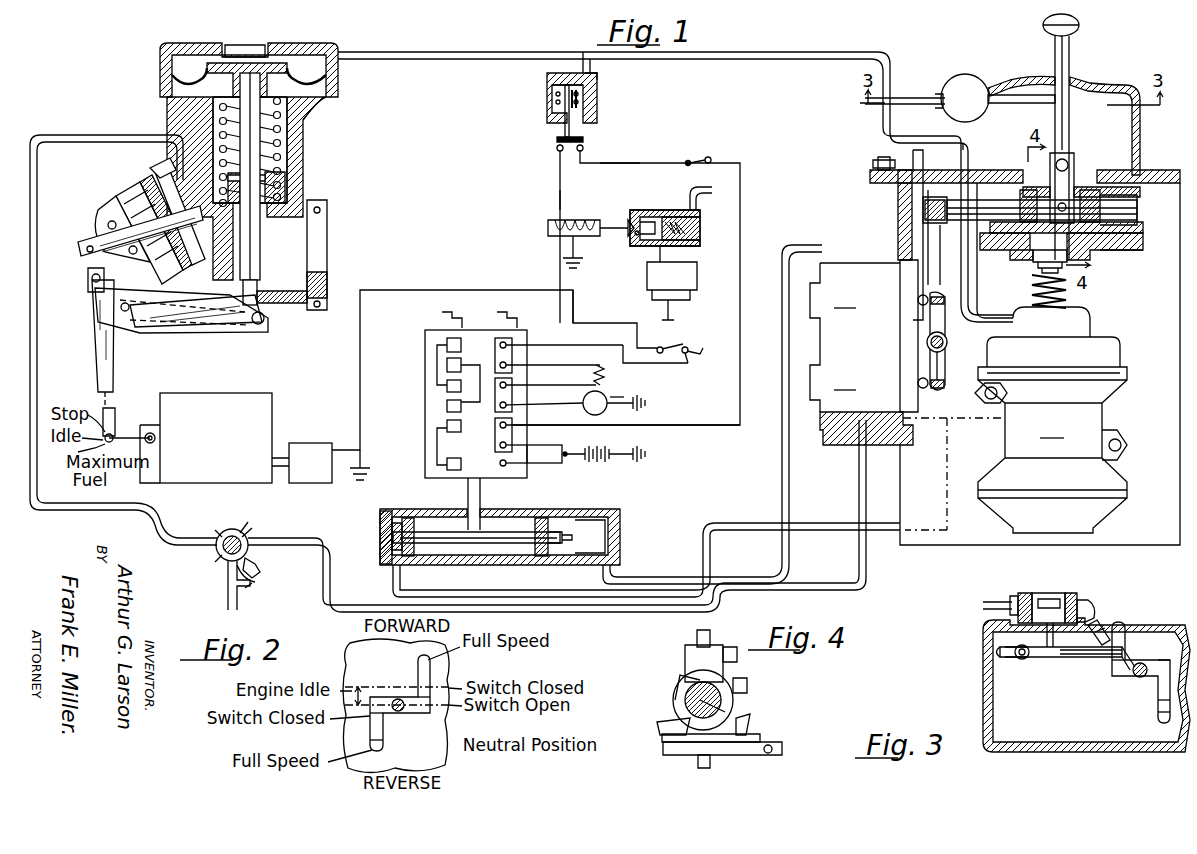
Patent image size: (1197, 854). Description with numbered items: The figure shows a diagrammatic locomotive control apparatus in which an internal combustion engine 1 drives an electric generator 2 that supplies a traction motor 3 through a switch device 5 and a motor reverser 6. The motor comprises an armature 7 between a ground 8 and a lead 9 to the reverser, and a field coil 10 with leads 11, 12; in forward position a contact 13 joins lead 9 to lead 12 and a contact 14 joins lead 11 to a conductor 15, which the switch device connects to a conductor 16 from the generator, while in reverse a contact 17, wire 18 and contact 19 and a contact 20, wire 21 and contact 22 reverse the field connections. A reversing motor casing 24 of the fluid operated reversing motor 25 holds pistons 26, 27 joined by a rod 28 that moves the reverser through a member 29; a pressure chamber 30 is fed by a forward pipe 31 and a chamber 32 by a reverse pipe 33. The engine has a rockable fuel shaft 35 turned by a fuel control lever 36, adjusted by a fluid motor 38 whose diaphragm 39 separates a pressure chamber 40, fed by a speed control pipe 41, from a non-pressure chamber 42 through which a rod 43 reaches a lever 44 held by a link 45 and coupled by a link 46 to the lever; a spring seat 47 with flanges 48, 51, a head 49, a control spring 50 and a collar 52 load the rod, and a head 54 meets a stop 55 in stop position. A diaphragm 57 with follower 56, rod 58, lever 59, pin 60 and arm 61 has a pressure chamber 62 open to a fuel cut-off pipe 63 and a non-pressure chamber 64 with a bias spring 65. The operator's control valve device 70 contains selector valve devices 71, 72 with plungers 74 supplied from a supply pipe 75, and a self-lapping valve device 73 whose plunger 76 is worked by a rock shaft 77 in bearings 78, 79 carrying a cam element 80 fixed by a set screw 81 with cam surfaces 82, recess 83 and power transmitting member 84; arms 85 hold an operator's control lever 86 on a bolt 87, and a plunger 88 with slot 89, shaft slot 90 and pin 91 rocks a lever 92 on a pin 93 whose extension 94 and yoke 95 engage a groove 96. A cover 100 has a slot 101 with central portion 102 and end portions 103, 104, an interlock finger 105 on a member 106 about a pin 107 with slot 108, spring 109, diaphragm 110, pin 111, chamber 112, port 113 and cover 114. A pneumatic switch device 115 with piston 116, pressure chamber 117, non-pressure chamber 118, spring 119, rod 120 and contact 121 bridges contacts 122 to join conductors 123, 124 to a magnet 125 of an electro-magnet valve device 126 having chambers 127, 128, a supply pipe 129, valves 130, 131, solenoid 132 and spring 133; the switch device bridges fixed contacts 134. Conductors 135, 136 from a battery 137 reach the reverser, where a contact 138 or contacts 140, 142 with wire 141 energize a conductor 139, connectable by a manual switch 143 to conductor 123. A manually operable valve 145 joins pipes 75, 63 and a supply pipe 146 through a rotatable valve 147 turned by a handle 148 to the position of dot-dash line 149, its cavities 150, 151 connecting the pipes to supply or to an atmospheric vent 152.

In FIG. 1, the internal combustion engine 1 is at (198, 485).
In FIG. 1, the electric generator 2 is at (322, 484).
In FIG. 1, the traction motor 3 is at (617, 387).
In FIG. 1, the switch device 5 is at (646, 293).
In FIG. 1, the motor reverser 6 is at (418, 404).
In FIG. 1, the motor armature 7 is at (588, 410).
In FIG. 1, the ground 8 is at (646, 404).
In FIG. 1, the motor lead 9 is at (546, 407).
In FIG. 1, the field coil 10 is at (600, 380).
In FIG. 1, the field lead 11 is at (580, 367).
In FIG. 1, the field lead 12 is at (553, 379).
In FIG. 1, the contact 13 is at (530, 397).
In FIG. 1, the contact 14 is at (512, 355).
In FIG. 1, the conductor 15 is at (560, 350).
In FIG. 1, the conductor 16 is at (593, 322).
In FIG. 1, the contact 17 is at (447, 409).
In FIG. 1, the wire 18 is at (472, 386).
In FIG. 1, the contact 19 is at (447, 366).
In FIG. 1, the contact 20 is at (447, 389).
In FIG. 1, the wire 21 is at (437, 361).
In FIG. 1, the contact 22 is at (447, 343).
In FIG. 1, the reversing cylinder 24 is at (505, 516).
In FIG. 1, the reversing motor 25 is at (420, 565).
In FIG. 1, the piston 26 is at (545, 556).
In FIG. 1, the piston 27 is at (382, 551).
In FIG. 1, the rod 28 is at (492, 545).
In FIG. 1, the member 29 is at (467, 495).
In FIG. 1, the pressure chamber 30 is at (590, 560).
In FIG. 1, the forward pipe 31 is at (789, 556).
In FIG. 1, the pressure chamber 32 is at (382, 524).
In FIG. 1, the reverse pipe 33 is at (867, 579).
In FIG. 1, the rockable shaft 35 is at (148, 446).
In FIG. 1, the fuel control lever 36 is at (120, 436).
In FIG. 1, the fluid motor 38 is at (302, 122).
In FIG. 1, the flexible diaphragm 39 is at (322, 80).
In FIG. 1, the pressure chamber 40 is at (305, 58).
In FIG. 1, the speed control pipe 41 is at (455, 52).
In FIG. 3, the speed control pipe 41 is at (995, 600).
In FIG. 1, the non-pressure chamber 42 is at (281, 114).
In FIG. 1, the rod 43 is at (243, 137).
In FIG. 1, the lever 44 is at (285, 305).
In FIG. 1, the link 45 is at (328, 245).
In FIG. 1, the link 46 is at (113, 392).
In FIG. 1, the spring seat 47 is at (270, 190).
In FIG. 1, the outturned annular flange 48 is at (282, 200).
In FIG. 1, the head 49 is at (176, 77).
In FIG. 1, the control spring 50 is at (215, 107).
In FIG. 1, the inturned flange 51 is at (268, 178).
In FIG. 1, the collar 52 is at (250, 189).
In FIG. 1, the head 54 is at (207, 64).
In FIG. 1, the stop 55 is at (226, 56).
In FIG. 1, the follower 56 is at (124, 206).
In FIG. 1, the flexible diaphragm 57 is at (141, 186).
In FIG. 1, the rod 58 is at (80, 252).
In FIG. 1, the lever 59 is at (88, 280).
In FIG. 1, the pin 60 is at (128, 312).
In FIG. 1, the arm 61 is at (190, 318).
In FIG. 1, the pressure chamber 62 is at (163, 172).
In FIG. 1, the fuel cut-off pipe 63 is at (38, 337).
In FIG. 1, the non-pressure chamber 64 is at (95, 297).
In FIG. 1, the bias spring 65 is at (100, 222).
In FIG. 1, the operator's control valve device 70 is at (915, 81).
In FIG. 1, the selector valve device 71 is at (861, 354).
In FIG. 1, the selector valve device 72 is at (845, 380).
In FIG. 1, the self-lapping valve device 73 is at (1051, 420).
In FIG. 1, the plunger 74 is at (920, 305).
In FIG. 1, the fluid pressure supply pipe 75 is at (826, 523).
In FIG. 1, the plunger 76 is at (1040, 279).
In FIG. 4, the plunger 76 is at (699, 760).
In FIG. 1, the rock shaft 77 is at (1018, 185).
In FIG. 4, the rock shaft 77 is at (727, 713).
In FIG. 1, the bearing 78 is at (1135, 249).
In FIG. 1, the bearing 79 is at (1015, 241).
In FIG. 1, the cam element 80 is at (1090, 243).
In FIG. 4, the cam element 80 is at (678, 686).
In FIG. 4, the set screw 81 is at (748, 688).
In FIG. 4, the cam surfaces 82 is at (660, 724).
In FIG. 4, the recess 83 is at (662, 740).
In FIG. 1, the power transmitting member 84 is at (1040, 263).
In FIG. 4, the power transmitting member 84 is at (663, 752).
In FIG. 4, the arms 85 is at (685, 658).
In FIG. 1, the operator's control lever 86 is at (1071, 45).
In FIG. 2, the operator's control lever 86 is at (400, 711).
In FIG. 4, the operator's control lever 86 is at (697, 640).
In FIG. 3, the operator's control lever 86 is at (1140, 680).
In FIG. 4, the bolt 87 is at (738, 660).
In FIG. 1, the plunger 88 is at (955, 195).
In FIG. 4, the plunger 88 is at (675, 693).
In FIG. 1, the slot 89 is at (1138, 231).
In FIG. 1, the slot 90 is at (1138, 204).
In FIG. 1, the pin 91 is at (1138, 216).
In FIG. 1, the lever 92 is at (948, 335).
In FIG. 1, the pin 93 is at (948, 347).
In FIG. 1, the extension 94 is at (926, 256).
In FIG. 1, the yoke 95 is at (925, 213).
In FIG. 1, the annular groove 96 is at (898, 203).
In FIG. 1, the cover 100 is at (890, 111).
In FIG. 2, the cover 100 is at (447, 750).
In FIG. 3, the cover 100 is at (1086, 685).
In FIG. 1, the slot 101 is at (1046, 84).
In FIG. 2, the slot 101 is at (428, 718).
In FIG. 3, the slot 101 is at (1156, 702).
In FIG. 2, the central portion 102 is at (397, 696).
In FIG. 3, the central portion 102 is at (1116, 672).
In FIG. 2, the slot portion 103 is at (433, 668).
In FIG. 3, the slot portion 103 is at (1158, 716).
In FIG. 2, the slot portion 104 is at (370, 735).
In FIG. 3, the slot portion 104 is at (1126, 640).
In FIG. 3, the finger 105 is at (1160, 665).
In FIG. 1, the member 106 is at (1000, 95).
In FIG. 3, the member 106 is at (1085, 659).
In FIG. 3, the pin 107 is at (1022, 660).
In FIG. 3, the slot 108 is at (998, 655).
In FIG. 3, the spring 109 is at (1105, 630).
In FIG. 3, the flexible diaphragm 110 is at (1072, 594).
In FIG. 3, the pin 111 is at (1050, 660).
In FIG. 3, the pressure chamber 112 is at (1050, 596).
In FIG. 3, the restricted port 113 is at (1027, 593).
In FIG. 1, the cover 114 is at (960, 80).
In FIG. 3, the cover 114 is at (1090, 606).
In FIG. 1, the pneumatically controlled switch device 115 is at (548, 85).
In FIG. 1, the piston 116 is at (585, 92).
In FIG. 1, the pressure chamber 117 is at (598, 78).
In FIG. 1, the non-pressure chamber 118 is at (580, 105).
In FIG. 1, the spring 119 is at (556, 108).
In FIG. 1, the rod 120 is at (562, 120).
In FIG. 1, the movable switch contact 121 is at (585, 138).
In FIG. 1, the stationary contacts 122 is at (578, 158).
In FIG. 1, the electrical conductor 123 is at (606, 167).
In FIG. 1, the electrical conductor 124 is at (560, 203).
In FIG. 1, the magnet 125 is at (602, 222).
In FIG. 1, the electro-magnet valve device 126 is at (631, 220).
In FIG. 1, the chamber 127 is at (650, 220).
In FIG. 1, the chamber 128 is at (702, 222).
In FIG. 1, the fluid pressure supply pipe 129 is at (250, 588).
In FIG. 1, the valve 130 is at (670, 247).
In FIG. 1, the valve 131 is at (635, 238).
In FIG. 1, the solenoid 132 is at (550, 233).
In FIG. 1, the spring 133 is at (702, 234).
In FIG. 1, the fixed contacts 134 is at (702, 350).
In FIG. 1, the conductor 135 is at (527, 452).
In FIG. 1, the conductor 136 is at (545, 464).
In FIG. 1, the battery 137 is at (605, 458).
In FIG. 1, the contact 138 is at (512, 441).
In FIG. 1, the conductor 139 is at (735, 431).
In FIG. 1, the contact 140 is at (447, 467).
In FIG. 1, the wire 141 is at (437, 453).
In FIG. 1, the contact 142 is at (447, 429).
In FIG. 1, the manually operable switch 143 is at (686, 151).
In FIG. 1, the manually operable valve 145 is at (216, 560).
In FIG. 1, the fluid pressure supply pipe 146 is at (228, 592).
In FIG. 1, the rotatable valve 147 is at (246, 522).
In FIG. 1, the handle 148 is at (260, 566).
In FIG. 1, the dot-dash line 149 is at (255, 530).
In FIG. 1, the cavity 150 is at (220, 536).
In FIG. 1, the cavity 151 is at (256, 582).
In FIG. 1, the atmospheric vent 152 is at (228, 530).